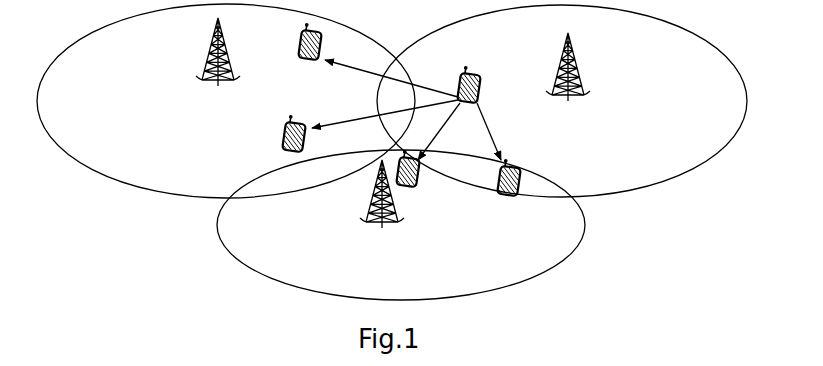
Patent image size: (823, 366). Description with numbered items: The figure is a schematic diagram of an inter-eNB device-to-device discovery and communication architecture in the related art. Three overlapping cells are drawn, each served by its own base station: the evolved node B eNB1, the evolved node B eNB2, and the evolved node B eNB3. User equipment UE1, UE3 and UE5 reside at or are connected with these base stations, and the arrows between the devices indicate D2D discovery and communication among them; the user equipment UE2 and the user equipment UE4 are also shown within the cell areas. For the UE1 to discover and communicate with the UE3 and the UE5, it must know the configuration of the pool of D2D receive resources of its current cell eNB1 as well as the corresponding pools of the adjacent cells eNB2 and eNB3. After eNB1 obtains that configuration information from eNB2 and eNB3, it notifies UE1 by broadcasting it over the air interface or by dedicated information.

The evolved node B eNB1 is at (220, 65).
The evolved node B eNB2 is at (565, 81).
The evolved node B eNB3 is at (384, 207).
The user equipment UE1 is at (307, 55).
The user equipment UE2 is at (295, 149).
The user equipment UE3 is at (473, 98).
The user equipment UE4 is at (416, 183).
The user equipment UE5 is at (512, 193).